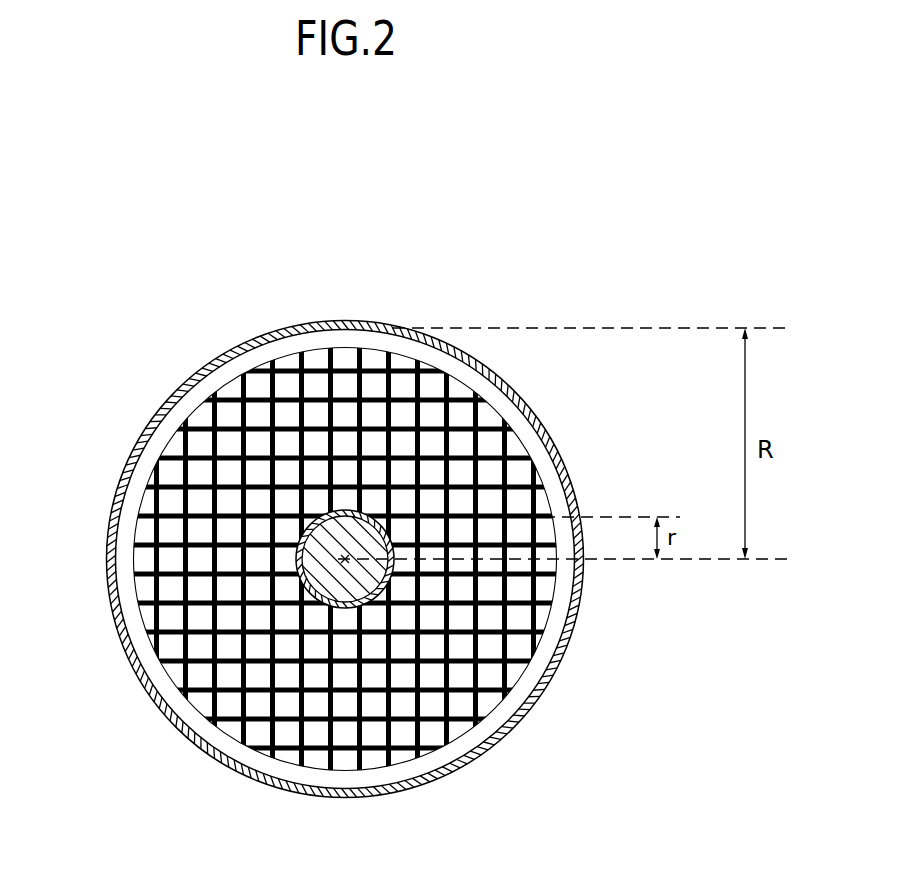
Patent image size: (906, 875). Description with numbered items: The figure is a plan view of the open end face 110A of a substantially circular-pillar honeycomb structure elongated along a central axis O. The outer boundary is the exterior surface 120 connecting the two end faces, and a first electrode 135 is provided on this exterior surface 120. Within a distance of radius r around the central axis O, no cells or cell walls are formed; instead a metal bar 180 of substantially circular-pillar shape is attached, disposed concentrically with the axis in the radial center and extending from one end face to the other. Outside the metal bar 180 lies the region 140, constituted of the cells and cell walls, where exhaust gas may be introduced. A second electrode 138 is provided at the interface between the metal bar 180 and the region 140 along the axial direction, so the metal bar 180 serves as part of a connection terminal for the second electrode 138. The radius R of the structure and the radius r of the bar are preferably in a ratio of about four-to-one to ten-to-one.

The end face 110A is at (501, 254).
The exterior surface 120 is at (514, 371).
The first electrode 135 is at (524, 401).
The region 140 is at (228, 415).
The second electrode 138 is at (300, 560).
The metal bar 180 is at (355, 570).